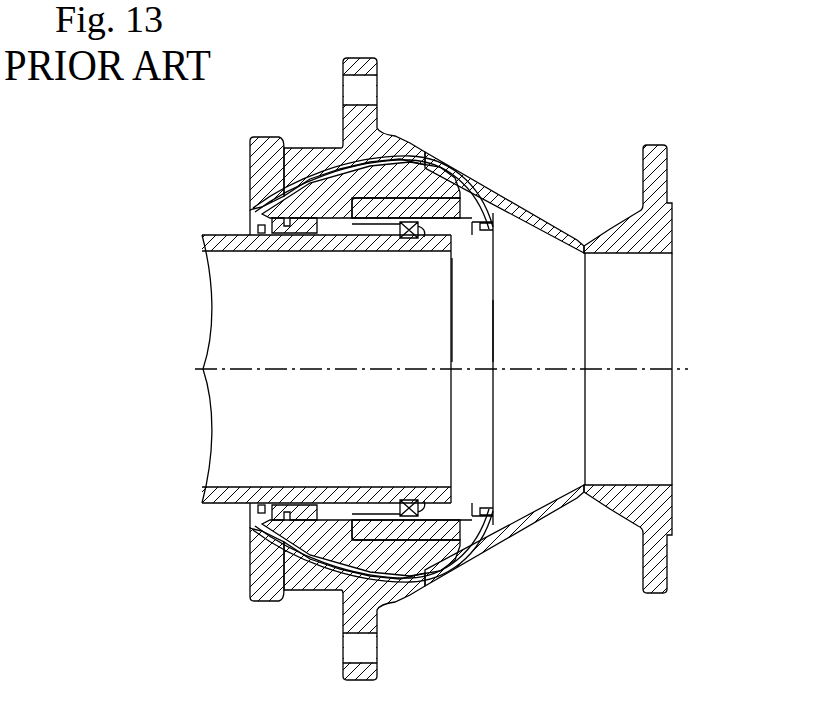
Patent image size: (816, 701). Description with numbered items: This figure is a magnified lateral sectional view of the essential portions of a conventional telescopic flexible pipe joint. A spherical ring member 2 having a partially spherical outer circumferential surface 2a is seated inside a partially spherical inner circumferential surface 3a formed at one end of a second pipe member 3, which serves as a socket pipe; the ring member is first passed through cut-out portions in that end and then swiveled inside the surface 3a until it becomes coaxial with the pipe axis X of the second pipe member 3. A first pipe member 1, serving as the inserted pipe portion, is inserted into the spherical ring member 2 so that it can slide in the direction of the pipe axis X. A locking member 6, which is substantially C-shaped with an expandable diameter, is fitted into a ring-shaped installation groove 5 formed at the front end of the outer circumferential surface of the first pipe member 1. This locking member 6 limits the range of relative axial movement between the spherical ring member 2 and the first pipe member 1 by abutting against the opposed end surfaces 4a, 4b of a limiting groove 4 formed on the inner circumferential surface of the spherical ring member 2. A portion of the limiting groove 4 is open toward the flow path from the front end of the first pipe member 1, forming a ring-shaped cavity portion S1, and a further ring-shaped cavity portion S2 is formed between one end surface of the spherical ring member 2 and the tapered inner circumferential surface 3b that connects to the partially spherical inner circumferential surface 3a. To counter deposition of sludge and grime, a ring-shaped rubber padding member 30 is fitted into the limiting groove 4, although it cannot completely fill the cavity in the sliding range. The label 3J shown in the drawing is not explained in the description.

The first pipe member 1 is at (262, 253).
The spherical ring member 2 is at (322, 197).
The partially spherical outer circumferential surface 2a is at (318, 566).
The second pipe member 3 is at (413, 140).
The partially spherical inner circumferential surface 3a is at (470, 182).
The tapered inner circumferential surface 3b is at (560, 240).
The hub journal portion 3J is at (260, 187).
The limiting groove 4 is at (367, 522).
The end surface of limiting groove 4a is at (472, 500).
The end surface of limiting groove 4b is at (337, 500).
The installation groove 5 is at (419, 240).
The locking member 6 is at (434, 551).
The padding member 30 is at (378, 226).
The cavity portion S1 is at (467, 236).
The cavity portion S2 is at (521, 232).
The pipe axis X is at (661, 369).